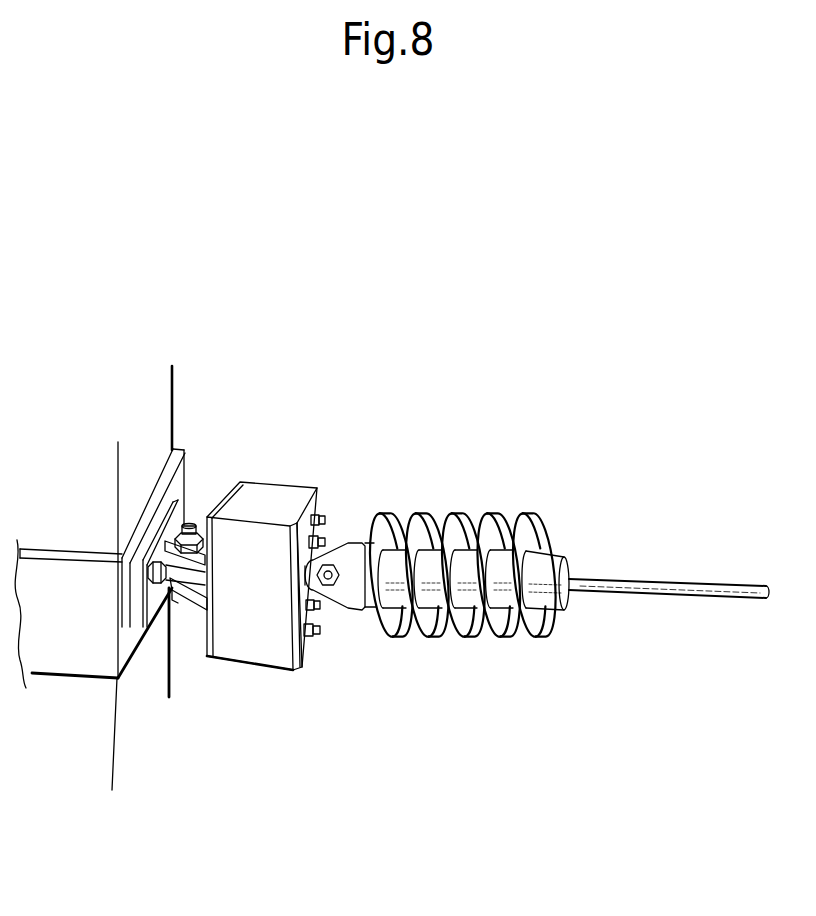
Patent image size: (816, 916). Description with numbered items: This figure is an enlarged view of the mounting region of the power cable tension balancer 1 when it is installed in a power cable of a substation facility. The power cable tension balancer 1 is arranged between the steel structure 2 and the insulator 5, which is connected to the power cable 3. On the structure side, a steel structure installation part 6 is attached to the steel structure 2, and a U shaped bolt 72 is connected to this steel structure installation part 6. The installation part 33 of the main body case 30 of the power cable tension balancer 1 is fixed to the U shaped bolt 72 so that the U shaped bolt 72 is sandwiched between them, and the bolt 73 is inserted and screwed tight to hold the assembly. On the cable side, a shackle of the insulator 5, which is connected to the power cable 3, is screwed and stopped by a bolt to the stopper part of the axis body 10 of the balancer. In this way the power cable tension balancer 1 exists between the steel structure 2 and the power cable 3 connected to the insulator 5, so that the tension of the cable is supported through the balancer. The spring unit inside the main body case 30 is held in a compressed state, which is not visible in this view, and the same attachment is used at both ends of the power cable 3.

The power cable tension balancer 1 is at (289, 445).
The steel structure 2 is at (166, 404).
The power cable 3 is at (694, 583).
The insulator 5 is at (541, 523).
The steel structure installation part 6 is at (100, 661).
The axis body 10 is at (318, 556).
The main body case 30 is at (260, 652).
The installation part 33 is at (200, 596).
The U shaped bolt 72 is at (183, 590).
The bolt 73 is at (189, 525).